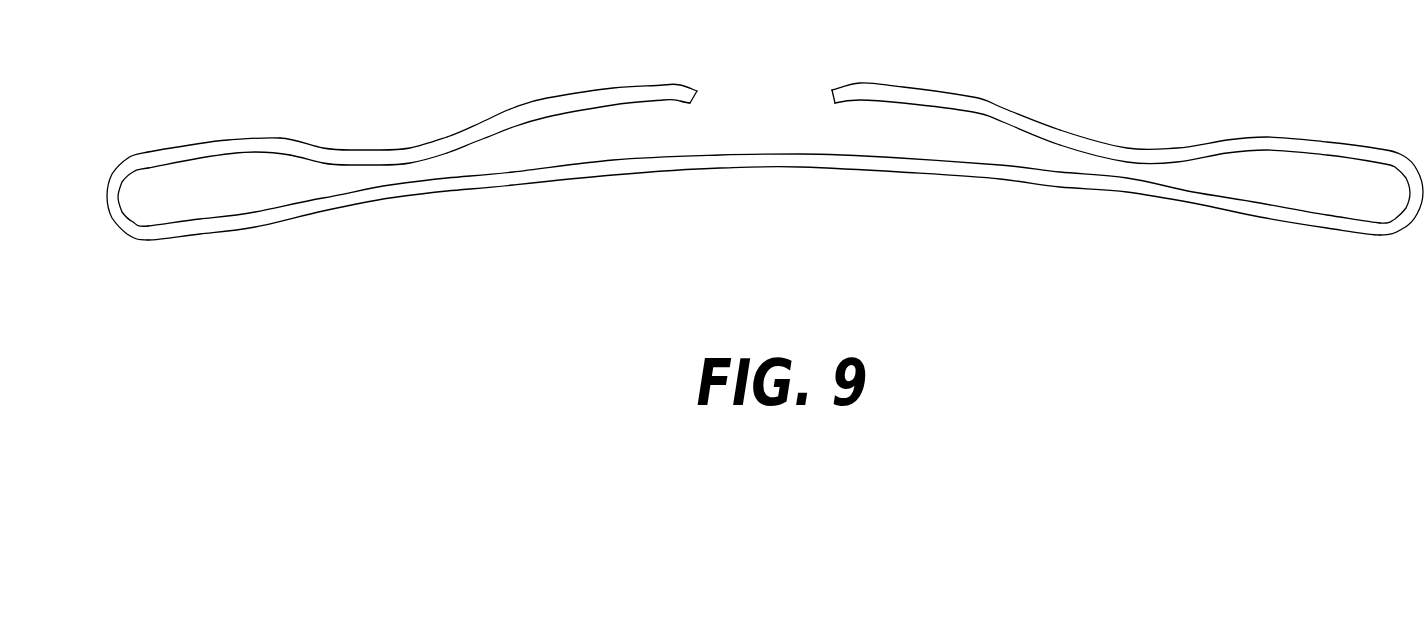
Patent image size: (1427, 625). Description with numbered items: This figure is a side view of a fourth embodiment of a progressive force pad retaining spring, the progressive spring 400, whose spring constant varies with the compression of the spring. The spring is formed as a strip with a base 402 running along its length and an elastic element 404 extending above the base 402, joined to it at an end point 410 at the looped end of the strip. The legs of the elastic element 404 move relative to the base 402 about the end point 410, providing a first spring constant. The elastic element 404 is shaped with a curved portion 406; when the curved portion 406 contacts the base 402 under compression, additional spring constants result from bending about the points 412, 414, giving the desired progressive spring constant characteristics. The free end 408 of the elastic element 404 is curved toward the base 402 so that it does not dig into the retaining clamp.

The progressive spring 400 is at (760, 173).
The base 402 is at (792, 168).
The elastic element 404 is at (228, 140).
The curved portion 406 is at (1130, 148).
The end of elastic element 408 is at (833, 98).
The end point 410 is at (109, 216).
The bending point 412 is at (293, 140).
The bending point 414 is at (518, 105).